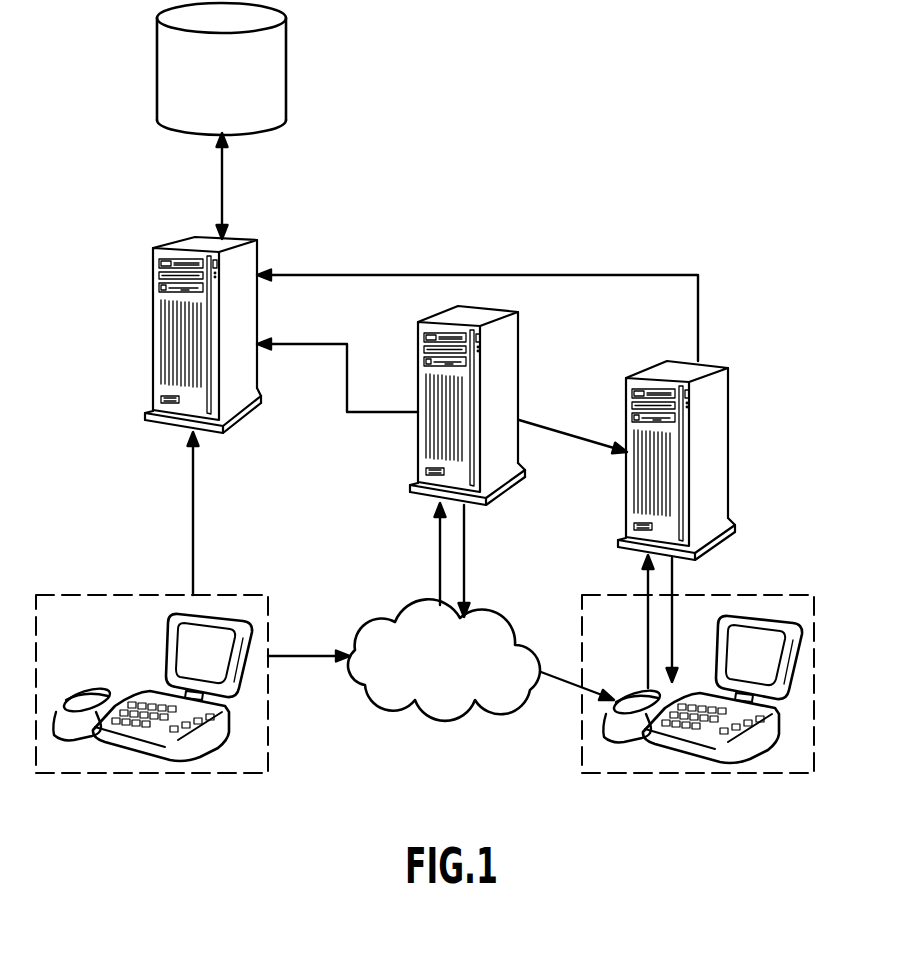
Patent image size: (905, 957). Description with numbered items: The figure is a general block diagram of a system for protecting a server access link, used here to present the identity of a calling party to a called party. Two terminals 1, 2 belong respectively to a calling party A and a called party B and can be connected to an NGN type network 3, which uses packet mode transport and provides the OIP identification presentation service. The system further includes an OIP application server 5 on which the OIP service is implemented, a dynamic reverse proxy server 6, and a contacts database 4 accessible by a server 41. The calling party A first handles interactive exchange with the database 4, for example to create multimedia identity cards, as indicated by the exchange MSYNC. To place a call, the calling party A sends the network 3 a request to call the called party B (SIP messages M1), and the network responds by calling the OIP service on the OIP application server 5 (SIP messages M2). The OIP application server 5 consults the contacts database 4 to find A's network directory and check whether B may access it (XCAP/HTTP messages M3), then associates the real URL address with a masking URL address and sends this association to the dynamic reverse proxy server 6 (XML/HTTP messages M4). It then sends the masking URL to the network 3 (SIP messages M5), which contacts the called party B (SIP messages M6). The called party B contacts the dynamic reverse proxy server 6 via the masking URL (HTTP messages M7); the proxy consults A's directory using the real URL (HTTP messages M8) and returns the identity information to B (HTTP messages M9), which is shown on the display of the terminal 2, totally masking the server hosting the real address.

The terminal 1 is at (170, 655).
The terminal 2 is at (770, 737).
The NGN type network 3 is at (454, 673).
The contacts database 4 is at (226, 93).
The server 41 is at (244, 312).
The OIP application server 5 is at (507, 395).
The dynamic reverse proxy server 6 is at (714, 447).
The calling party A is at (60, 764).
The called party B is at (606, 764).
The SIP messages M1 is at (299, 664).
The SIP messages M2 is at (437, 566).
The XCAP/HTTP messages M3 is at (346, 379).
The XML/HTTP messages M4 is at (572, 440).
The SIP messages M5 is at (465, 549).
The SIP messages M6 is at (562, 690).
The HTTP messages M7 is at (648, 640).
The HTTP messages M8 is at (478, 273).
The HTTP messages M9 is at (675, 575).
The Msync exchange MSYNC is at (194, 489).